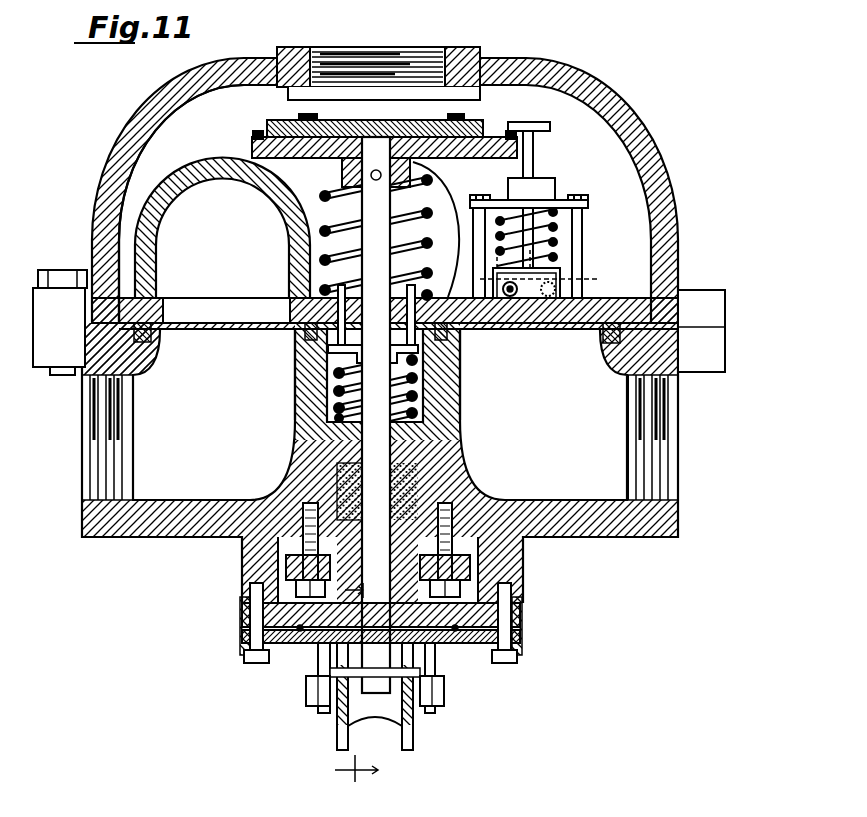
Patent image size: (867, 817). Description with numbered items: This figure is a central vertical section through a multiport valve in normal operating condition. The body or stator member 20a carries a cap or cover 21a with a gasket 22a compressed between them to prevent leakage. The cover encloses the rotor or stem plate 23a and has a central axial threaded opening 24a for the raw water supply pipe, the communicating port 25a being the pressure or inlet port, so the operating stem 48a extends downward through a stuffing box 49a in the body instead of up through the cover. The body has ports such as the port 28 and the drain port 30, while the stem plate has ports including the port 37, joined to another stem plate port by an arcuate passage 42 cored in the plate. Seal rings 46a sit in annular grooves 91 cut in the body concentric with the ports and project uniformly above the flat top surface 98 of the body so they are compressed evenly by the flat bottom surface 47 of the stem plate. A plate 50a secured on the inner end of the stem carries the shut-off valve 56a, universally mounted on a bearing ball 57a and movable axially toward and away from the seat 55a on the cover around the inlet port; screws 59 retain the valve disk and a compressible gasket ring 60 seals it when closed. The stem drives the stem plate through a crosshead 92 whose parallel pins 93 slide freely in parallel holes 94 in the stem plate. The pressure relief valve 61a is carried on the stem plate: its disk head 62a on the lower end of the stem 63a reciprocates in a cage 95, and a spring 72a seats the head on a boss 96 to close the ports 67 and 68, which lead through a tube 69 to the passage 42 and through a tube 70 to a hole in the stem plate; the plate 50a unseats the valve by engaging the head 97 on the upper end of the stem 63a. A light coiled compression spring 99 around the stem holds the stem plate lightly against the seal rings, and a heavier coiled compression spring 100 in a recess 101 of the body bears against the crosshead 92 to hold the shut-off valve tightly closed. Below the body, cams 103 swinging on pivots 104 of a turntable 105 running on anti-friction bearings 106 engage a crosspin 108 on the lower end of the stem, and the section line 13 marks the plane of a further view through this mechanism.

The body or stator member 20a is at (100, 540).
The cap or cover 21a is at (92, 206).
The gasket 22a is at (90, 298).
The rotor or stem plate 23a is at (143, 212).
The central axial threaded opening 24a is at (437, 57).
The port 25a is at (482, 100).
The port 28 is at (214, 415).
The drain port 30 is at (543, 415).
The port 37 is at (217, 314).
The arcuate passage 42 is at (207, 190).
The gasket or seal rings 46a is at (150, 343).
The flat bottom surface 47 is at (165, 320).
The operating stem 48a is at (395, 437).
The stuffing box 49a is at (420, 483).
The plate 50a is at (533, 152).
The seat 55a is at (375, 117).
The shut-off valve 56a is at (302, 125).
The bearing ball 57a is at (380, 138).
The screws 59 is at (275, 133).
The compressible gasket ring 60 is at (465, 122).
The pressure relief valve 61a is at (562, 271).
The disk head 62a is at (510, 252).
The stem 63a is at (533, 170).
The port 67 is at (460, 266).
The port 68 is at (555, 286).
The tube 69 is at (510, 297).
The tube 70 is at (548, 297).
The spring 72a is at (556, 246).
The annular grooves 91 is at (140, 345).
The crosshead 92 is at (330, 352).
The parallel pins 93 is at (448, 346).
The parallel holes 94 is at (452, 283).
The cage 95 is at (582, 220).
The boss 96 is at (568, 298).
The head 97 is at (550, 127).
The flat top surface 98 is at (220, 329).
The light coiled compression spring 99 is at (326, 190).
The heavier coiled compression spring 100 is at (332, 407).
The recess 101 is at (420, 386).
The cams 103 is at (414, 743).
The pivots 104 is at (437, 700).
The turntable 105 is at (300, 630).
The anti-friction bearings 106 is at (455, 630).
The crosspin 108 is at (375, 715).
The section line 13 is at (348, 688).